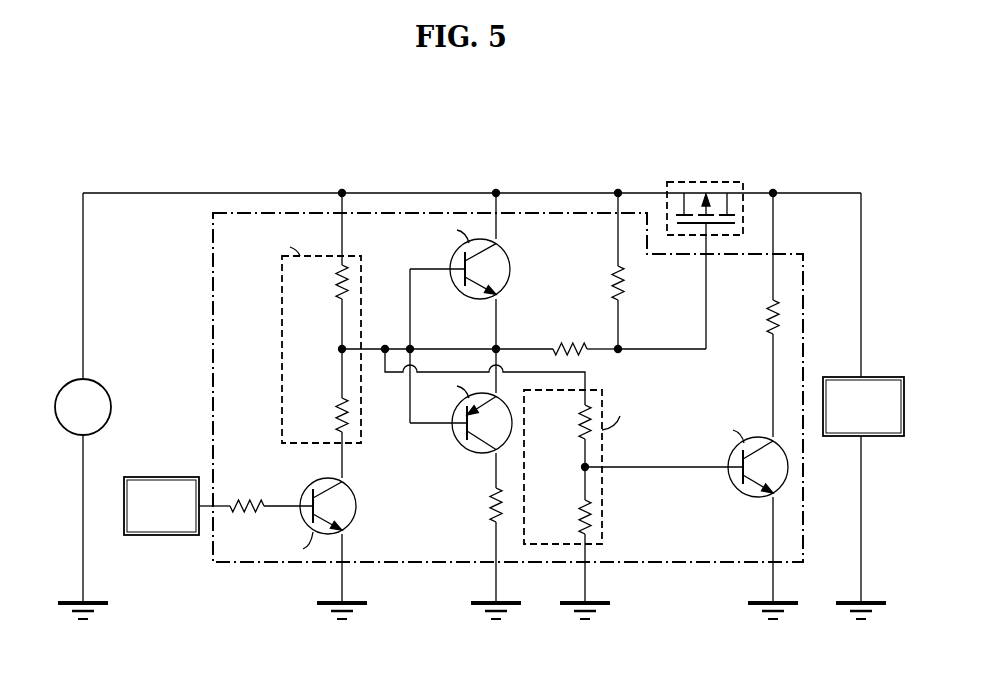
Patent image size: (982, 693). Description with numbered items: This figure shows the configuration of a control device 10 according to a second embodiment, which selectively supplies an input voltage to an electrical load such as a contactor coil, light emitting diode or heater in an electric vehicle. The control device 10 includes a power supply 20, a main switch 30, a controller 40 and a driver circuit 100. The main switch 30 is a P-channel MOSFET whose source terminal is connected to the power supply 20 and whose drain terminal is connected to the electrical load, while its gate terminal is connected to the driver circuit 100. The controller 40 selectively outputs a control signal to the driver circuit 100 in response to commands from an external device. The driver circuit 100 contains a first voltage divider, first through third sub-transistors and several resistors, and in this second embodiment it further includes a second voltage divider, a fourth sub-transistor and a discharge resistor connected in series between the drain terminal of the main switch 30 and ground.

The control device 10 is at (121, 126).
The power supply 20 is at (70, 381).
The main switch 30 is at (682, 182).
The controller 40 is at (162, 477).
The driver circuit 100 is at (213, 286).